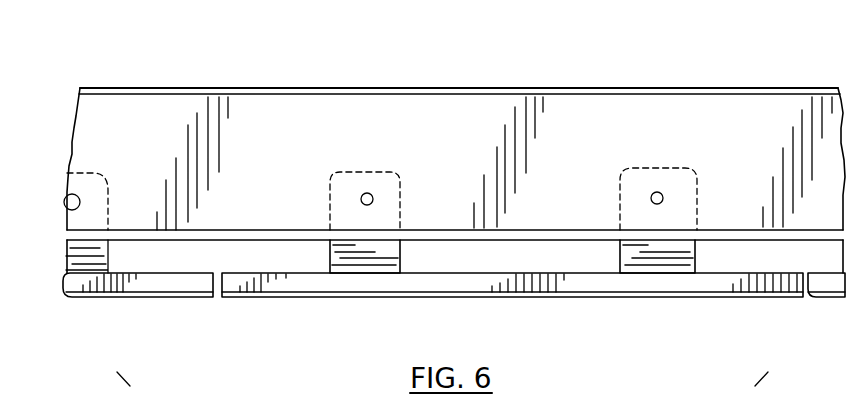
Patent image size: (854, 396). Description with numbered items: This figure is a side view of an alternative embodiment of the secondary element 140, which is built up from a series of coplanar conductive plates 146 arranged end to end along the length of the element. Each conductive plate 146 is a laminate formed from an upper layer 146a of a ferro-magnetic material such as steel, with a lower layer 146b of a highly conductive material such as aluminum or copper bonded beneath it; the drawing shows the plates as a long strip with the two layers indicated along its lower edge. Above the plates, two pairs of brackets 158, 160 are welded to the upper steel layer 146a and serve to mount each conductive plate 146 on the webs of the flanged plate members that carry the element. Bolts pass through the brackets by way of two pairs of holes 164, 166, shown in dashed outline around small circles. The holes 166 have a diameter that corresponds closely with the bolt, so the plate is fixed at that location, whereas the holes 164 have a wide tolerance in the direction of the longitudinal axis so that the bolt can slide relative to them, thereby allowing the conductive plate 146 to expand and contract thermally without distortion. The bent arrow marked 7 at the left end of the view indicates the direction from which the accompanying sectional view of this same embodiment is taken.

The secondary element 140 is at (491, 80).
The section line 7- 7 is at (26, 248).
The conductive plates 146 is at (454, 322).
The upper layer 146a is at (462, 280).
The strip portion b 146b is at (350, 297).
The brackets 158 is at (400, 255).
The brackets 160 is at (695, 255).
The holes 164 is at (372, 196).
The holes 166 is at (663, 195).